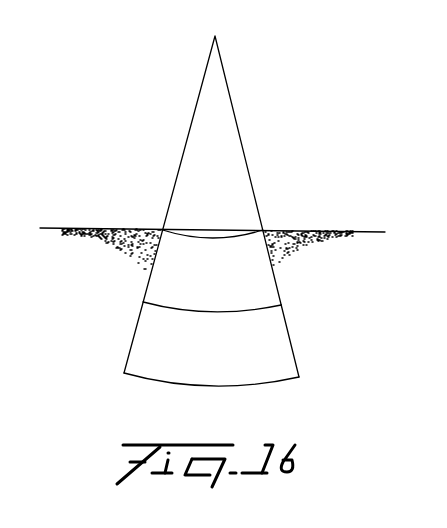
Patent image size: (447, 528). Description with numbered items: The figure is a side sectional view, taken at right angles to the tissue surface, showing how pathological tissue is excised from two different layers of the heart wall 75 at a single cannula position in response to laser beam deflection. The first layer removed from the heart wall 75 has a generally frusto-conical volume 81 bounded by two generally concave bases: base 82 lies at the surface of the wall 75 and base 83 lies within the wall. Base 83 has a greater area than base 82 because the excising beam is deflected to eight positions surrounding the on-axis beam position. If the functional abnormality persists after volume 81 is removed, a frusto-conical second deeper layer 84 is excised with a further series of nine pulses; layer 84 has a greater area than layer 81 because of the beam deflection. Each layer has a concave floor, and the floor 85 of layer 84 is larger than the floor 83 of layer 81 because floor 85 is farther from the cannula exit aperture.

The heart wall 75 is at (318, 247).
The frusto-conical volume 81 is at (150, 273).
The concave base 82 is at (237, 234).
The concave base 83 is at (262, 306).
The second deeper layer 84 is at (130, 345).
The floor 85 is at (263, 380).